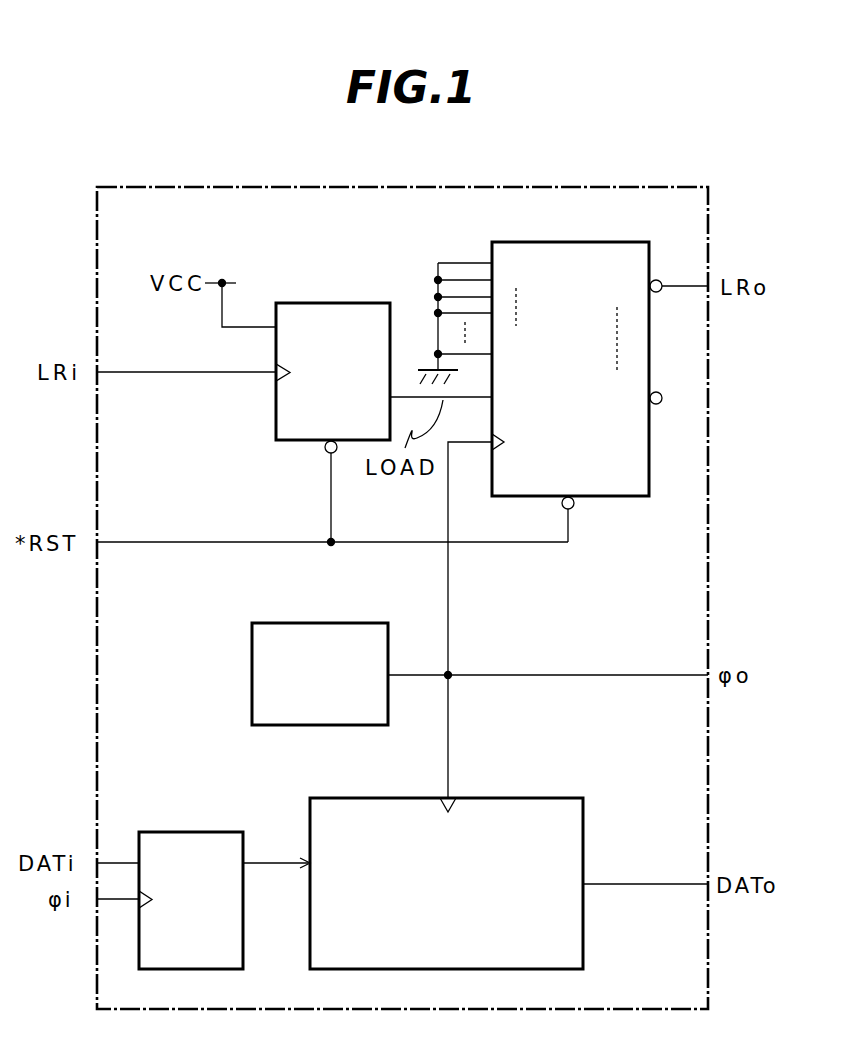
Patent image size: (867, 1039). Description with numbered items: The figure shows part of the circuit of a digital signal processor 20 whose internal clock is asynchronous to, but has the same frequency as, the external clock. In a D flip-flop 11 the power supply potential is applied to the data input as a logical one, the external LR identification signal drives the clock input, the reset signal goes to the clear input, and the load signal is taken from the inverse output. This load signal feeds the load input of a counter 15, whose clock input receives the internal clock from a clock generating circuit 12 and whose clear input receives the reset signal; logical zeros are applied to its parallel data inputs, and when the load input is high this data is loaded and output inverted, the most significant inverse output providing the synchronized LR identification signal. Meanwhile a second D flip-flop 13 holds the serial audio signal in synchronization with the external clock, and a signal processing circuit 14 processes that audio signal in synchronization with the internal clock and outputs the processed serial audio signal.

The digital signal processor 20 is at (532, 187).
The D flip-flop 11 is at (323, 303).
The clock generating circuit 12 is at (252, 663).
The D flip-flop 13 is at (197, 832).
The signal processing circuit 14 is at (540, 798).
The counter 15 is at (612, 497).